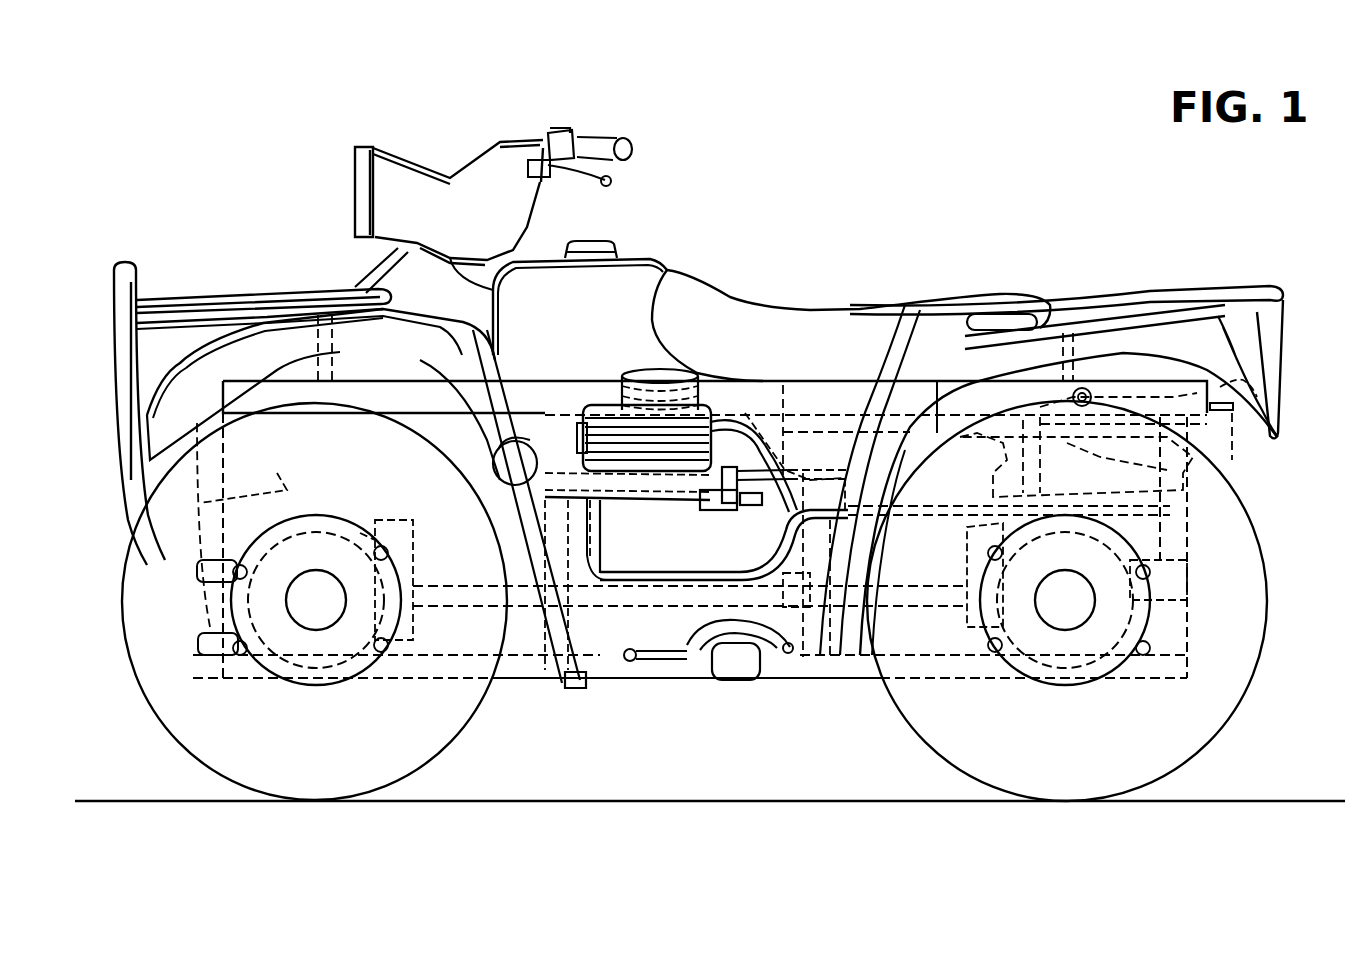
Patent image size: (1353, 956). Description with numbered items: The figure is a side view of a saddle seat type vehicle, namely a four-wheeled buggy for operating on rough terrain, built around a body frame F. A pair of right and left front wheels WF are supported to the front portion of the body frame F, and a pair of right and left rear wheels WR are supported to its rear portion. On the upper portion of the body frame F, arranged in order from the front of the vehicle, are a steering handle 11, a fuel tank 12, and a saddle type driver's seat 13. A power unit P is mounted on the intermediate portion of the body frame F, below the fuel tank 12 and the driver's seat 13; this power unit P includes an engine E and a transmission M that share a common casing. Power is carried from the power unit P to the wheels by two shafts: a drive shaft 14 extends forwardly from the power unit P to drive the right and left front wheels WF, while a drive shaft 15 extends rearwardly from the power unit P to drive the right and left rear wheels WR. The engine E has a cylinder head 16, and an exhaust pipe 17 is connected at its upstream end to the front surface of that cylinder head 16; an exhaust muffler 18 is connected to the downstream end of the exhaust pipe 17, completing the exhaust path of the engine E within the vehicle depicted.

The steering handle 11 is at (597, 148).
The fuel tank 12 is at (632, 268).
The saddle type driver's seat 13 is at (905, 322).
The drive shaft 14 is at (533, 585).
The drive shaft 15 is at (927, 587).
The cylinder head 16 is at (593, 397).
The exhaust pipe 17 is at (750, 510).
The exhaust muffler 18 is at (1255, 520).
The body frame F is at (759, 381).
The engine E is at (613, 500).
The transmission M is at (707, 683).
The power unit P is at (683, 742).
The front wheels WF is at (175, 706).
The rear wheels WR is at (1185, 722).